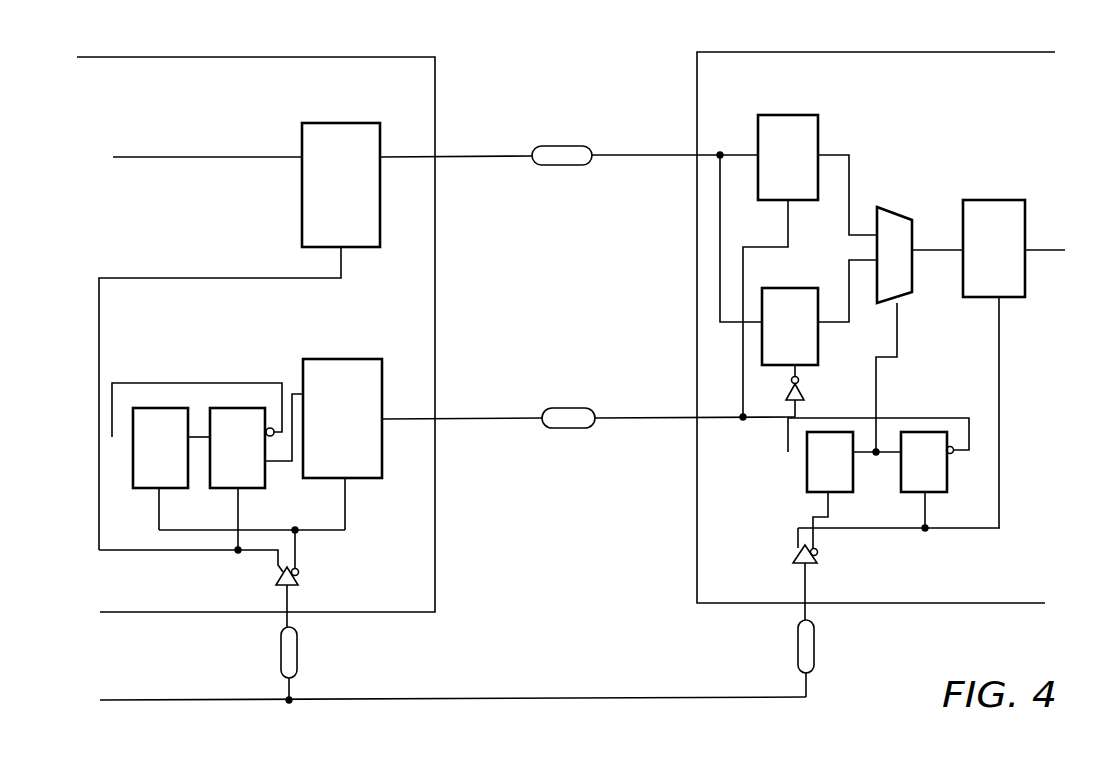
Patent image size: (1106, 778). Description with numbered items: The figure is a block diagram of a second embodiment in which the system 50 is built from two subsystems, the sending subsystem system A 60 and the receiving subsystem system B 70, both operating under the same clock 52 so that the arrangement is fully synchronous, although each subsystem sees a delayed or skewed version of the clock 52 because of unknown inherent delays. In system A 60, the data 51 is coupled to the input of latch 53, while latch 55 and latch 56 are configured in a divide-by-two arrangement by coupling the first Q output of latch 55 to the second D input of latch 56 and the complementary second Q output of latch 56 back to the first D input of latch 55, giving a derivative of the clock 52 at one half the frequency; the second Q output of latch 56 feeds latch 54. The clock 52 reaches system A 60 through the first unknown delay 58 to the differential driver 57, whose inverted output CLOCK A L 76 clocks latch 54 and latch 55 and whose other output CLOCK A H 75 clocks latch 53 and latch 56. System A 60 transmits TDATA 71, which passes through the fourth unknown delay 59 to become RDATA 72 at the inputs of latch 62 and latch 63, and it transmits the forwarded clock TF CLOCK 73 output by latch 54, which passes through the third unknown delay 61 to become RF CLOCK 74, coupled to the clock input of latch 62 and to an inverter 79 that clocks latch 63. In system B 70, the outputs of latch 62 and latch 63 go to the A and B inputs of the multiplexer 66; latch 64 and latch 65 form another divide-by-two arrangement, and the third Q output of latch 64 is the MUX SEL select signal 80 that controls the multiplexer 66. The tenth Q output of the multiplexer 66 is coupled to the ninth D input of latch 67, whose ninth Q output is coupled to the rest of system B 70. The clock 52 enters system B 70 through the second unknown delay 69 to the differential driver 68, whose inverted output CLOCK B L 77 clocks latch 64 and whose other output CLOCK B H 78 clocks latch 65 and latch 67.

The system 50 is at (548, 722).
The data 51 is at (190, 157).
The clock 52 is at (155, 683).
The latch 53 is at (352, 223).
The latch 54 is at (350, 462).
The latch 55 is at (172, 481).
The latch 56 is at (221, 490).
The differential driver 57 is at (300, 573).
The delay D1 58 is at (327, 665).
The delay D4 59 is at (563, 145).
The system A 60 is at (233, 56).
The delay D3 61 is at (572, 385).
The latch 62 is at (797, 138).
The latch 63 is at (805, 283).
The latch 64 is at (807, 474).
The latch 65 is at (945, 480).
The multiplexer 66 is at (903, 288).
The latch 67 is at (1015, 288).
The differential driver 68 is at (818, 553).
The delay D2 69 is at (843, 652).
The system B 70 is at (837, 51).
The TDATA 71 is at (497, 121).
The RDATA 72 is at (657, 138).
The TF CLOCK 73 is at (510, 390).
The RF CLOCK 74 is at (657, 390).
The CLOCK A H 75 is at (153, 553).
The CLOCK A L 76 is at (343, 515).
The CLOCK B L 77 is at (772, 514).
The CLOCK B H 78 is at (903, 530).
The inverter 79 is at (801, 395).
The MUX SEL select signal 80 is at (930, 367).